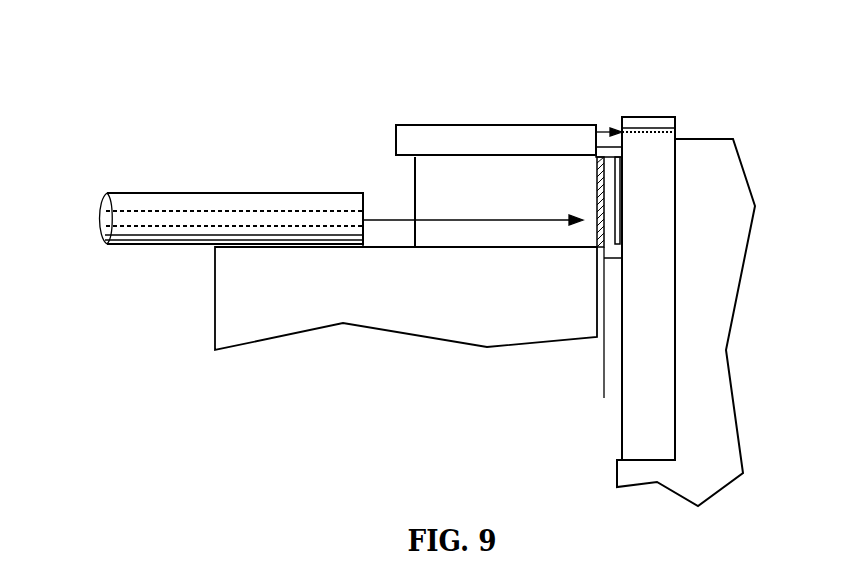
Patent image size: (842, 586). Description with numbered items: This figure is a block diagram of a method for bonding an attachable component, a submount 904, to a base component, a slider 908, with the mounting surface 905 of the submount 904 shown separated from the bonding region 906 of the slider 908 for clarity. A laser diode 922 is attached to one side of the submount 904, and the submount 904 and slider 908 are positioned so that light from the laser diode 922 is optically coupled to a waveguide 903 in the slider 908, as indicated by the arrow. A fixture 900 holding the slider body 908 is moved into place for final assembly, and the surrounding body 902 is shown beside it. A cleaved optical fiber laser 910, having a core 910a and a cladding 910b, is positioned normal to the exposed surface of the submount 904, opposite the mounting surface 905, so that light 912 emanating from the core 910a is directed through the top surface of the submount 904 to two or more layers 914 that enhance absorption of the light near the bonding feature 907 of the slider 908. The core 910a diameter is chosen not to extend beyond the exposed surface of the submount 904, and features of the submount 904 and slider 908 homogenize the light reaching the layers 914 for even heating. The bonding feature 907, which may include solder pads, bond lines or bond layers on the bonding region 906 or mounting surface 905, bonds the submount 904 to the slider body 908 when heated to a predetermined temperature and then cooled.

The fixture 900 is at (738, 178).
The lower body 902 is at (422, 318).
The waveguide 903 is at (676, 132).
The submount 904 is at (499, 202).
The mounting surface 905 is at (600, 155).
The bonding region 906 is at (612, 150).
The bonding feature 907 is at (617, 152).
The slider 908 is at (646, 117).
The optical fiber laser 910 is at (183, 192).
The core 910a is at (100, 213).
The cladding 910b is at (102, 242).
The light 912 is at (377, 220).
The layers 914 is at (415, 190).
The laser diode 922 is at (515, 125).